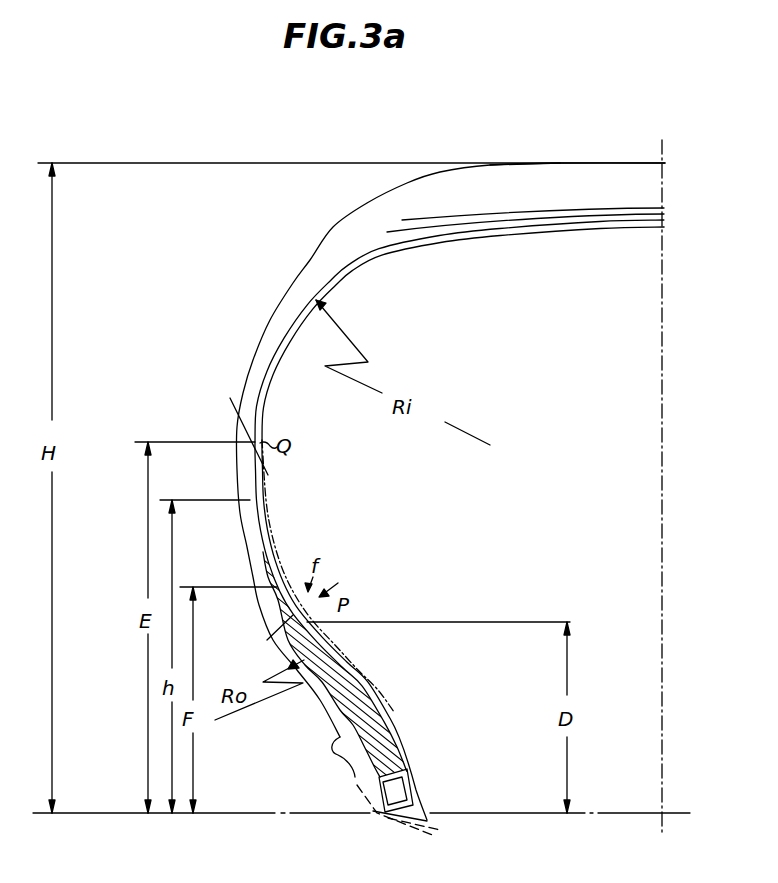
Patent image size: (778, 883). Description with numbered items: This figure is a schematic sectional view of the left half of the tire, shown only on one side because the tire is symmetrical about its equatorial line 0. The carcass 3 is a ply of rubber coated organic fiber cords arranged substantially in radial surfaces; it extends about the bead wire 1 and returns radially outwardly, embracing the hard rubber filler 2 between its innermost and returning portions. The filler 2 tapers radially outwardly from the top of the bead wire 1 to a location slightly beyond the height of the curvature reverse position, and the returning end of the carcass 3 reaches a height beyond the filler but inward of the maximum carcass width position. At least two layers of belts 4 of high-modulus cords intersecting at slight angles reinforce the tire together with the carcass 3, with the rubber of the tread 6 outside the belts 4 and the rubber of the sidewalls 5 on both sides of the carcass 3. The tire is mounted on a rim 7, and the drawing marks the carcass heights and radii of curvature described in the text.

The equatorial line 0 is at (661, 477).
The bead wire 1 is at (400, 793).
The hard rubber filler 2 is at (360, 707).
The carcass 3 is at (260, 500).
The belt 4 is at (432, 220).
The sidewall 5 is at (272, 312).
The tread 6 is at (538, 183).
The rim 7 is at (358, 783).